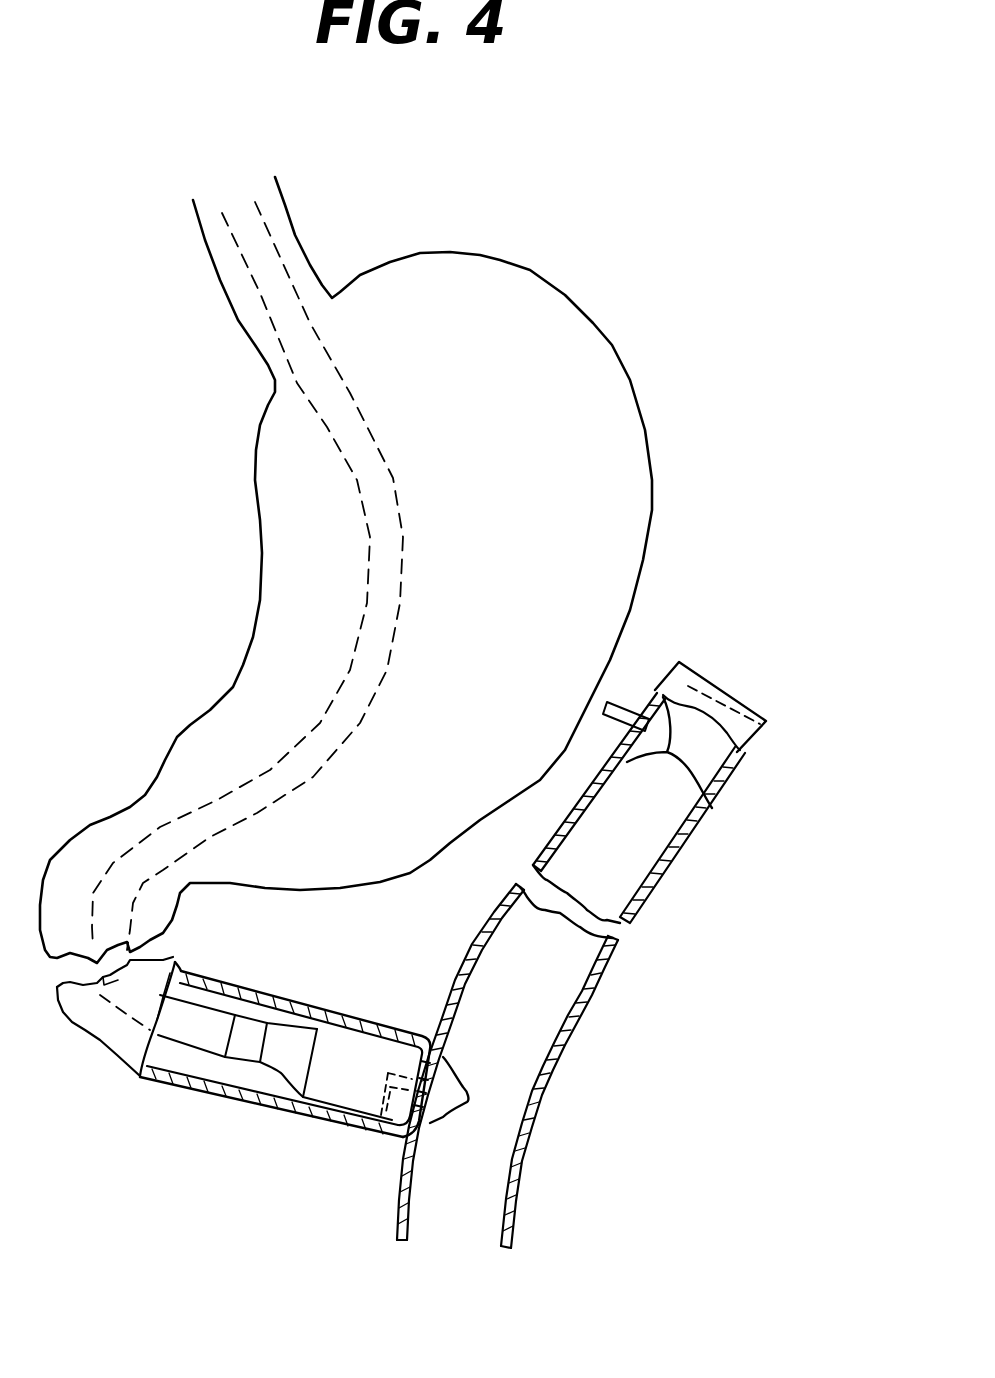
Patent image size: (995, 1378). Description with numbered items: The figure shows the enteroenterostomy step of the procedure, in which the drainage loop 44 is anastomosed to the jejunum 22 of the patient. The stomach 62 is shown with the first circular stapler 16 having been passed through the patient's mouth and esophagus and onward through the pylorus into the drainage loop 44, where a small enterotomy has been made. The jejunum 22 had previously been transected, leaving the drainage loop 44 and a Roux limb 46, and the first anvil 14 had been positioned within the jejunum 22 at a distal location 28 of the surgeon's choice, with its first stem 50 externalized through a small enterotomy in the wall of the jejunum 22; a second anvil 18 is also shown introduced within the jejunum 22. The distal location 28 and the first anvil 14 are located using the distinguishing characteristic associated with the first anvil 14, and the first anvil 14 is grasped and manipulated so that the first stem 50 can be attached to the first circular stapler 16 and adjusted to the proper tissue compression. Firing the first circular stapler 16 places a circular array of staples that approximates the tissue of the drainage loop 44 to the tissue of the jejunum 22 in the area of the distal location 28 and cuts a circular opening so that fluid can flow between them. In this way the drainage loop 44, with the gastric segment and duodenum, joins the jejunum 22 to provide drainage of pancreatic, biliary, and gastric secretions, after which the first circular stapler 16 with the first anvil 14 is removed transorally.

The first anvil 14 is at (467, 1102).
The first circular stapler 16 is at (278, 1075).
The second anvil 18 is at (708, 805).
The jejunum 22 is at (517, 1210).
The distal location 28 is at (655, 703).
The drainage loop 44 is at (272, 1117).
The Roux limb 46 is at (743, 763).
The first stem 50 is at (383, 1123).
The stomach 62 is at (257, 532).